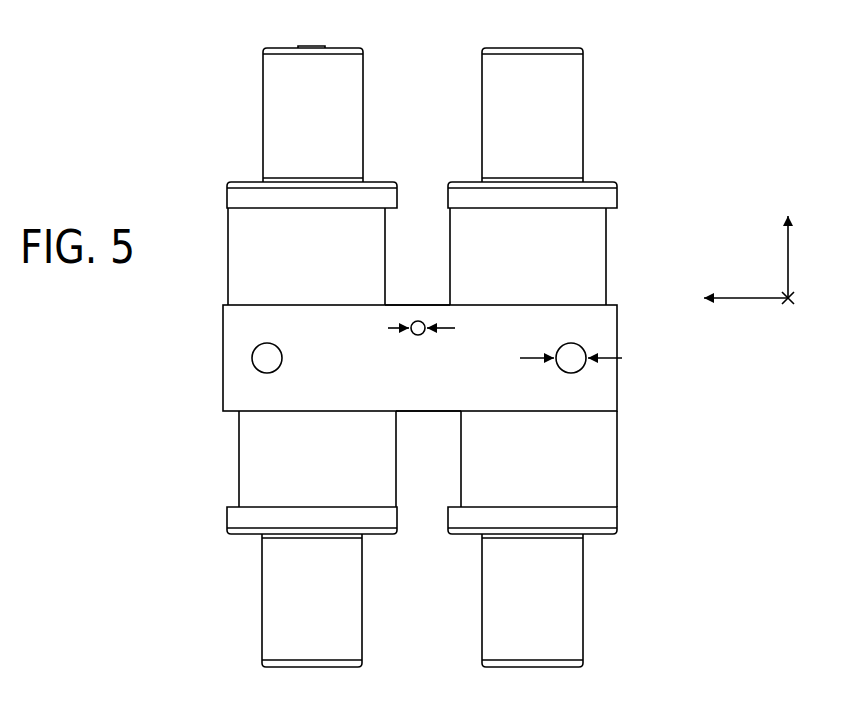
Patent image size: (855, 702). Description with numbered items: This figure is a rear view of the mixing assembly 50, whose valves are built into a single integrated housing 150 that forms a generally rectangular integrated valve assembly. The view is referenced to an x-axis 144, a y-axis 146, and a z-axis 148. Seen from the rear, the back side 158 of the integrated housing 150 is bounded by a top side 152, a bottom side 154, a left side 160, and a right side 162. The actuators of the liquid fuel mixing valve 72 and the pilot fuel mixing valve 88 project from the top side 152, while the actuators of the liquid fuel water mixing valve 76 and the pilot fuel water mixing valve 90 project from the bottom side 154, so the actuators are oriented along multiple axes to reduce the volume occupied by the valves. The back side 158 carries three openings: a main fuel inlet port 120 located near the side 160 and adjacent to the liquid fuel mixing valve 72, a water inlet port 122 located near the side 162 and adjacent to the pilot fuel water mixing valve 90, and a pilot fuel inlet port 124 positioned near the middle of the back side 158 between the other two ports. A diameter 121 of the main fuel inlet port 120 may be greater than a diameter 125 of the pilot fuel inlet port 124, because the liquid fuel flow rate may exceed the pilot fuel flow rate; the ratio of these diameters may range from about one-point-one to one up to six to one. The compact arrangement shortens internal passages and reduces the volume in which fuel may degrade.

The mixing assembly 50 is at (176, 32).
The liquid fuel mixing valve 72 is at (605, 143).
The liquid fuel water mixing valve 76 is at (598, 548).
The pilot fuel mixing valve 88 is at (245, 175).
The pilot fuel water mixing valve 90 is at (250, 575).
The main fuel inlet port 120 is at (582, 368).
The diameter of the main fuel inlet port 121 is at (522, 358).
The water inlet port 122 is at (258, 350).
The pilot fuel inlet port 124 is at (412, 323).
The diameter of the pilot fuel inlet port 125 is at (455, 328).
The x-axis 144 is at (748, 298).
The y-axis 146 is at (790, 300).
The z-axis 148 is at (788, 265).
The integrated housing 150 is at (221, 394).
The top side 152 is at (416, 305).
The bottom side 154 is at (421, 411).
The back side 158 is at (617, 312).
The left side 160 is at (618, 350).
The right side 162 is at (222, 307).